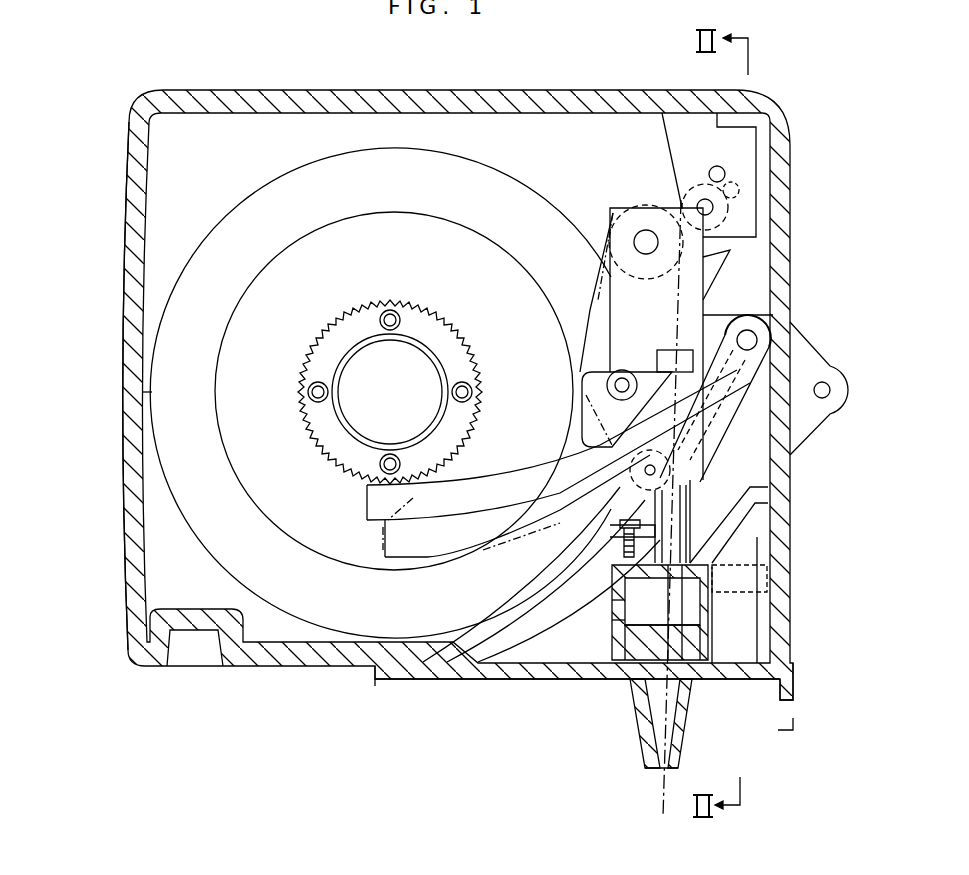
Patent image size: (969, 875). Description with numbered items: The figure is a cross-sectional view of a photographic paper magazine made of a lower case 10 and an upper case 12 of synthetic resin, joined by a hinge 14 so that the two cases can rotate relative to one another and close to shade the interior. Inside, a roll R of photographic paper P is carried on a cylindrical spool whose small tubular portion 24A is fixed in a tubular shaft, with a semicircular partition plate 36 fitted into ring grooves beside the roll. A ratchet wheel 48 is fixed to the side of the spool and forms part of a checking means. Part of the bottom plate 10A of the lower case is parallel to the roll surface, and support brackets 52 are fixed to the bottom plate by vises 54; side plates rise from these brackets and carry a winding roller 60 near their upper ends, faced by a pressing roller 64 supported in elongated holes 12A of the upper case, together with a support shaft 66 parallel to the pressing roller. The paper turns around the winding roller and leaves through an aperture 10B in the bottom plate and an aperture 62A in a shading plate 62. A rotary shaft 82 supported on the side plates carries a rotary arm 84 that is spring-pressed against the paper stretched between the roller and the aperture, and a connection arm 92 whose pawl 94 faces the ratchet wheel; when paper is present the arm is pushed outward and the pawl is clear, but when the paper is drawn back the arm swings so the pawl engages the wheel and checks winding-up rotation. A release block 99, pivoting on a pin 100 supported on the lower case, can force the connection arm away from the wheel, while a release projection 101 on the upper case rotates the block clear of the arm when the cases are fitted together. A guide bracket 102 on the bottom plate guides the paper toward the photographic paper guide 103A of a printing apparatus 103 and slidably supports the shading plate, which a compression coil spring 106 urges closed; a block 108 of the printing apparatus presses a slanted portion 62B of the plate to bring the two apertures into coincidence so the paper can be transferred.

The lower case 10 is at (120, 481).
The upper case 12 is at (123, 288).
The elongated holes 12A is at (717, 212).
The hinge 14 is at (831, 389).
The partition plate 36 is at (538, 200).
The roll of photographic paper R is at (428, 215).
The ratchet wheel 48 is at (479, 372).
The small tubular portion 24A is at (440, 342).
The pawl 94 is at (397, 463).
The connection arm 92 is at (488, 484).
The rotary shaft 82 is at (750, 330).
The rotary arm 84 is at (706, 460).
The winding roller 60 is at (640, 208).
The pressing roller 64 is at (700, 190).
The support shaft 66 is at (718, 166).
The photographic paper P is at (586, 320).
The release block 99 is at (598, 372).
The pin 100 is at (622, 370).
The release projection 101 is at (660, 350).
The vises 54 is at (647, 484).
The slanted portion 62B is at (725, 552).
The bottom plate 10A is at (528, 605).
The support brackets 52 is at (573, 546).
The guide bracket 102 is at (612, 642).
The shading plate 62 is at (612, 600).
The aperture 62A is at (612, 620).
The block 108 is at (757, 551).
The compression coil spring 106 is at (722, 590).
The aperture 10B is at (698, 622).
The printing apparatus 103 is at (795, 677).
The photographic paper guide 103A is at (688, 714).